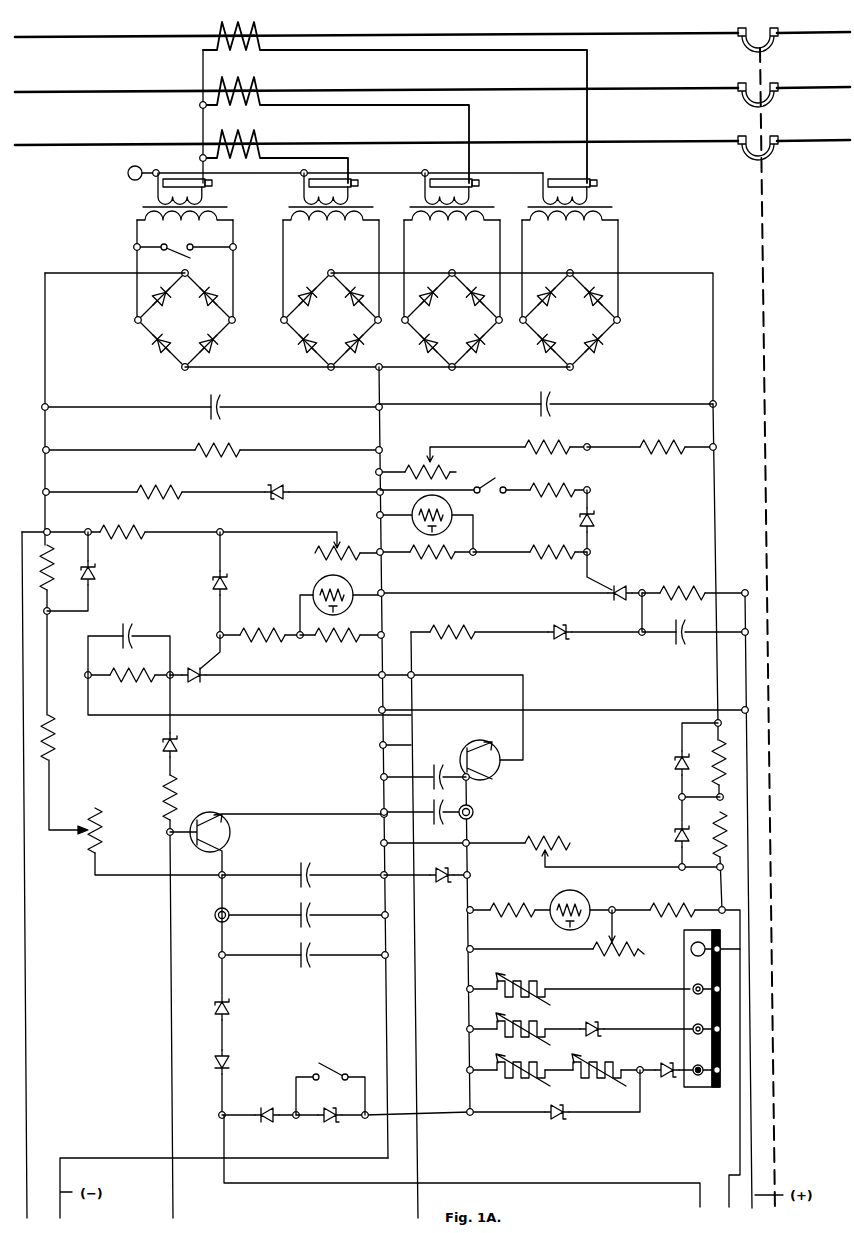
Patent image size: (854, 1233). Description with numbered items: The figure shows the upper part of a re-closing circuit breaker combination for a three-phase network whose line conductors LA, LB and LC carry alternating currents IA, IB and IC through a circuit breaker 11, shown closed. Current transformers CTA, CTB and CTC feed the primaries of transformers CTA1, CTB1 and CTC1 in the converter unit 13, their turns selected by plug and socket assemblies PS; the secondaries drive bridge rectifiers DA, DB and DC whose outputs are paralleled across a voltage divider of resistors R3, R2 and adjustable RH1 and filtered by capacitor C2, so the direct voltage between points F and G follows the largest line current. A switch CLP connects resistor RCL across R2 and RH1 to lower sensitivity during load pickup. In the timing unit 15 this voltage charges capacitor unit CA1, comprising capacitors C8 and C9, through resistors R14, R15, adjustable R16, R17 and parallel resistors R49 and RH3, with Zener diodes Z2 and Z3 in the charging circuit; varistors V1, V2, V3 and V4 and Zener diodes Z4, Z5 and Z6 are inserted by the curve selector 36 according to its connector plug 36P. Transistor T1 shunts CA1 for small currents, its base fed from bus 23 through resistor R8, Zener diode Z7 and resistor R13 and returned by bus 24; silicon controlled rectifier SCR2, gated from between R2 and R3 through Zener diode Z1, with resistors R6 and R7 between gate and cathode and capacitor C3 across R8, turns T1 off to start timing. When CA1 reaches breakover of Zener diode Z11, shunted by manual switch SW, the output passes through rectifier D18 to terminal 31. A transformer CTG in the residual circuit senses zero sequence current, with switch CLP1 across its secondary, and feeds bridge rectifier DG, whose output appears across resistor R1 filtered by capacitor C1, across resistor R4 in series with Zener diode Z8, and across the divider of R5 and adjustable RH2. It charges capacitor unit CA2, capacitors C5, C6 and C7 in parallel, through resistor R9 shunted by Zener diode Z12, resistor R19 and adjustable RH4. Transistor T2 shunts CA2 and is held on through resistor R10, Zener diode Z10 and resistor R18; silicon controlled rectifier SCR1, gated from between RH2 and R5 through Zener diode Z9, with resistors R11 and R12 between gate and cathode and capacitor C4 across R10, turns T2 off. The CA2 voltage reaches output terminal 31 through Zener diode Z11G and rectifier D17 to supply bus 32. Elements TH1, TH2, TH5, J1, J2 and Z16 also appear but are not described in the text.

The circuit breaker 11 is at (753, 171).
The converter unit 13 is at (673, 331).
The timing unit 15 is at (633, 695).
The bus 23 is at (745, 591).
The bus 24 is at (380, 745).
The output terminal 31 is at (222, 1115).
The bus 32 is at (698, 1196).
The curve selector 36 is at (700, 933).
The connector plug 36P is at (702, 1078).
The line conductor LA is at (52, 38).
The line conductor LB is at (52, 93).
The line conductor LC is at (54, 146).
The current transformer CTA is at (243, 25).
The current transformer CTB is at (247, 82).
The current transformer CTC is at (243, 134).
The plug and socket assembly PS is at (215, 189).
The transformer CTG is at (143, 206).
The transformer CTC1 is at (292, 205).
The transformer CTB1 is at (476, 205).
The transformer CTA1 is at (597, 205).
The switch CLP1 is at (182, 248).
The full wave rectifier DG is at (194, 329).
The rectifier DC is at (340, 329).
The rectifier DB is at (461, 329).
The rectifier DA is at (579, 329).
The capacitor C1 is at (215, 404).
The filter capacitor C2 is at (544, 400).
The resistor R1 is at (226, 447).
The adjustable resistor RH1 is at (450, 458).
The resistor R2 is at (523, 444).
The resistor R3 is at (657, 445).
The point F is at (713, 447).
The resistor R4 is at (164, 490).
The minimum voltage device Z8 is at (285, 488).
The resistor RCL is at (552, 478).
The switch unit CLP is at (503, 500).
The Zener diode Z1 is at (593, 520).
The point G is at (380, 515).
The thermistor TH1 is at (447, 509).
The resistor R5 is at (140, 530).
The adjustable resistor RH2 is at (326, 551).
The resistor R9 is at (52, 563).
The Zener diode Z12 is at (94, 576).
The Zener diode Z9 is at (212, 584).
The thermistor TH2 is at (318, 587).
The resistor R6 is at (430, 558).
The resistor R7 is at (535, 558).
The silicon controlled rectifier SCR2 is at (626, 586).
The resistor R8 is at (684, 586).
The resistor R11 is at (266, 632).
The resistor R12 is at (340, 643).
The resistor R13 is at (445, 630).
The Zener diode Z7 is at (558, 631).
The capacitor C3 is at (677, 639).
The resistor R10 is at (138, 683).
The silicon controlled rectifier SCR1 is at (198, 685).
The capacitor C4 is at (129, 631).
The Zener diode Z10 is at (178, 752).
The resistor R18 is at (181, 789).
The resistor R19 is at (66, 748).
The adjustable resistor RH4 is at (98, 808).
The transistor T2 is at (231, 834).
The capacitor C5 is at (304, 871).
The jack J2 is at (217, 914).
The capacitor C6 is at (312, 907).
The capacitor unit CA2 is at (375, 908).
The capacitor C7 is at (314, 949).
The Zener diode Z11G is at (233, 1016).
The rectifier D17 is at (231, 1066).
The rectifier D18 is at (274, 1122).
The minimum voltage device Z11 is at (331, 1124).
The manually operable switch SW is at (326, 1064).
The capacitor unit CA1 is at (465, 736).
The transistor T1 is at (484, 745).
The capacitor C8 is at (442, 770).
The capacitor C9 is at (438, 821).
The jack J1 is at (474, 812).
The adjustable resistor R16 is at (545, 840).
The zener diode Z16 is at (439, 883).
The resistor R14 is at (716, 750).
The resistor R15 is at (716, 826).
The Zener diode Z2 is at (672, 761).
The Zener diode Z3 is at (672, 838).
The resistor R49 is at (512, 904).
The thermistor TH5 is at (571, 893).
The resistor R17 is at (665, 905).
The adjustable resistor RH3 is at (641, 964).
The varistor V1 is at (504, 979).
The varistor V2 is at (538, 1018).
The Zener diode Z4 is at (595, 1024).
The varistor V4 is at (527, 1096).
The varistor V3 is at (601, 1096).
The Zener diode Z5 is at (657, 1061).
The Zener diode Z6 is at (560, 1119).
The alternating current IA is at (502, 16).
The alternating current IB is at (506, 70).
The alternating current IC is at (530, 125).